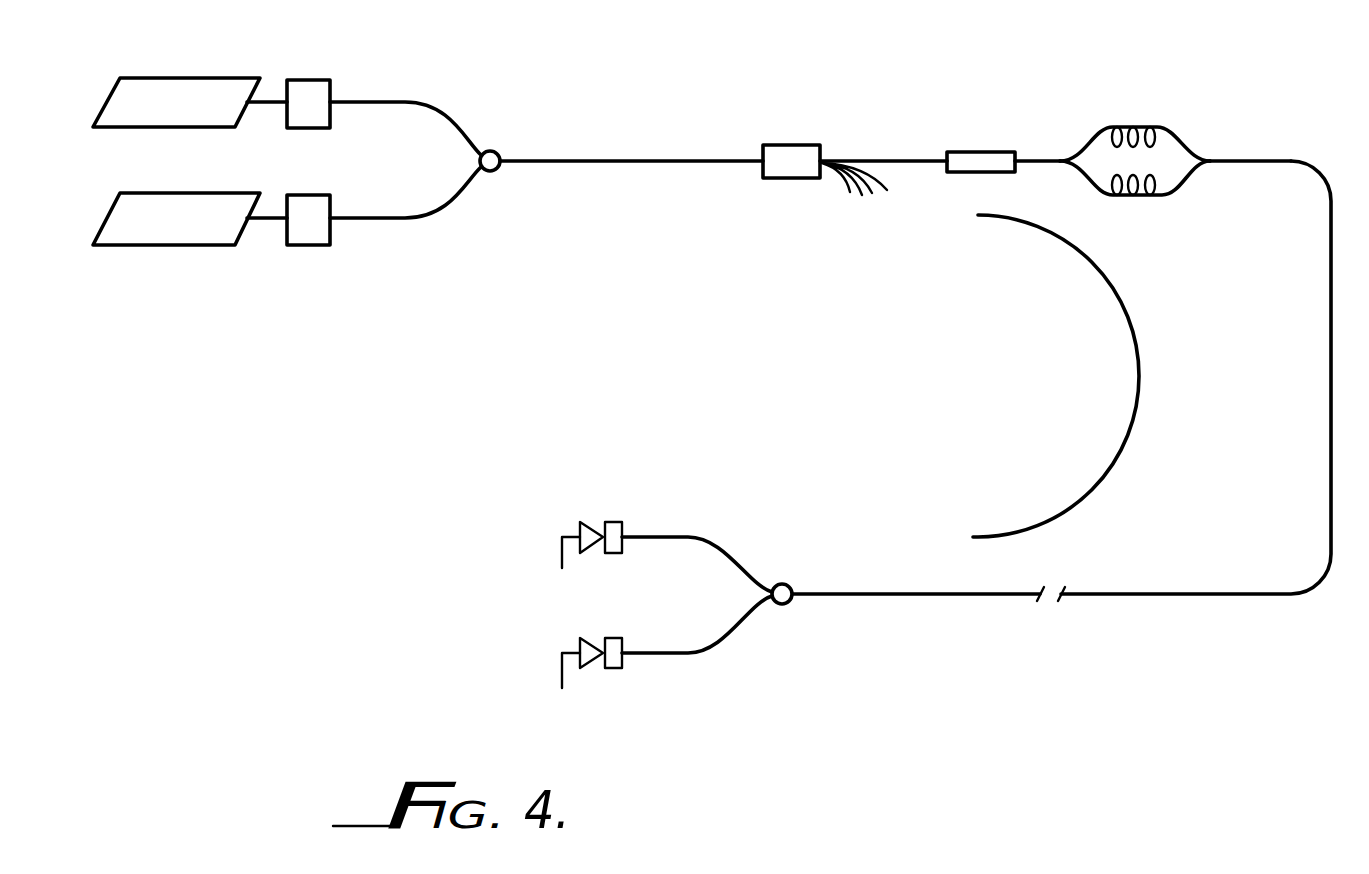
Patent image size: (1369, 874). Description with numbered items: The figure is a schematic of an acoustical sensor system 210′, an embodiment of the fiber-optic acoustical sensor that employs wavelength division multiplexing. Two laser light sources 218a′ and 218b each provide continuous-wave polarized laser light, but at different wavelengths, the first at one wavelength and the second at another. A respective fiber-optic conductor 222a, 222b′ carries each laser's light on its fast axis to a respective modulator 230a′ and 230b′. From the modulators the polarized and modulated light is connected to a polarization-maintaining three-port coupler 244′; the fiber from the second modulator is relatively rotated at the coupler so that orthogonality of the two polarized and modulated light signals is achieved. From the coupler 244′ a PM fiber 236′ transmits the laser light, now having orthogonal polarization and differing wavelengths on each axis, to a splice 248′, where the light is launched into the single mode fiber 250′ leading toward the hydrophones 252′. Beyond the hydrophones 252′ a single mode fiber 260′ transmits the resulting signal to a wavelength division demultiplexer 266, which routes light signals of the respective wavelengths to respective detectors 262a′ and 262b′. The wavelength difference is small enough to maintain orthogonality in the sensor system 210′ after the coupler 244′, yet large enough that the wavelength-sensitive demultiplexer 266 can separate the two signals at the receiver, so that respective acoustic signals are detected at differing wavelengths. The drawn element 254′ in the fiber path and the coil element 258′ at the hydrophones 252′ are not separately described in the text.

The acoustical sensor system 210′ is at (886, 100).
The laser light source 218a′ is at (158, 78).
The laser light source 218b is at (173, 193).
The fiber-optic conductor 222a is at (268, 100).
The fiber-optic conductor 222b′ is at (268, 220).
The modulator 230a′ is at (330, 118).
The modulator 230b′ is at (330, 237).
The polarization-maintaining three-port coupler 244′ is at (492, 151).
The PM fiber 236′ is at (568, 163).
The splice 248′ is at (781, 145).
The single mode fiber 250′ is at (888, 161).
The depolarizer 254′ is at (980, 152).
The hydrophones 252′ is at (1198, 150).
The phase modulator coil 258′ is at (1140, 127).
The single mode fiber 260′ is at (1331, 293).
The detector 262a′ is at (595, 522).
The detector 262b′ is at (595, 660).
The wavelength division demultiplexer 266 is at (790, 584).